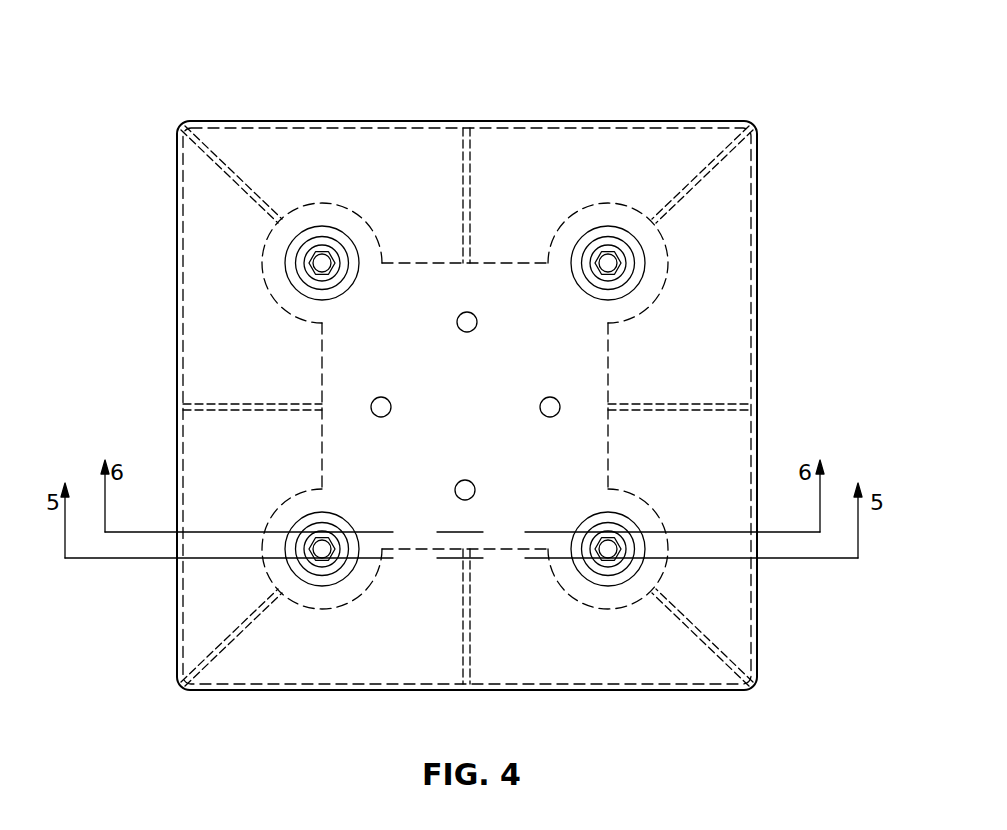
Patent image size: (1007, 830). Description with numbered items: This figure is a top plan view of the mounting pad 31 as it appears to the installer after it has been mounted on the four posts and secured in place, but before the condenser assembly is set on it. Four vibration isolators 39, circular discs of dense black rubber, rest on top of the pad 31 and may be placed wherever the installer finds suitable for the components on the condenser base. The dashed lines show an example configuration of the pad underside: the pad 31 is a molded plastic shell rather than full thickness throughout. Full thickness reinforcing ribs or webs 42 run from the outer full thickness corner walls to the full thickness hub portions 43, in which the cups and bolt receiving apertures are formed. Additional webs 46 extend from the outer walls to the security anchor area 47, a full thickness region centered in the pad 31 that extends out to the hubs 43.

The pad 31 is at (572, 105).
The vibration isolators 39 is at (467, 322).
The reinforcing ribs or webs 42 is at (225, 178).
The hub portions 43 is at (320, 205).
The webs 46 is at (463, 175).
The security anchor area 47 is at (479, 419).